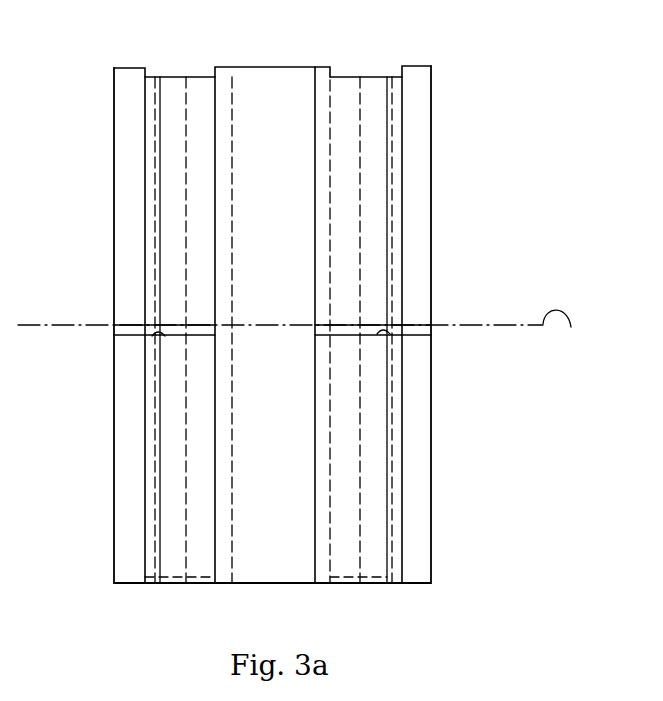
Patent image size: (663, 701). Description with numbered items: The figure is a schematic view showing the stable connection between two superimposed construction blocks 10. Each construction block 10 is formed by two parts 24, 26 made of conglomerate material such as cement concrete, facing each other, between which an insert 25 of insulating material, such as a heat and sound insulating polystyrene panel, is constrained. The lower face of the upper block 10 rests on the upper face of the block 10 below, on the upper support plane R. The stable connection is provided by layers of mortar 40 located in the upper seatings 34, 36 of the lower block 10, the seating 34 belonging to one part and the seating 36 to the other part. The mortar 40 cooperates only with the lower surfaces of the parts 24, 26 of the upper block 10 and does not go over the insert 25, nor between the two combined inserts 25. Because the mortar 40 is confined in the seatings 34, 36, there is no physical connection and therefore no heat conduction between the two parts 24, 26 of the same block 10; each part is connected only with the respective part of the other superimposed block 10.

The construction block 10 is at (106, 144).
The part 24 is at (412, 115).
The insert 25 is at (263, 80).
The part 26 is at (123, 115).
The upper seating 34 is at (363, 76).
The upper seating 36 is at (160, 77).
The mortar 40 is at (185, 330).
The upper support plane R is at (299, 335).